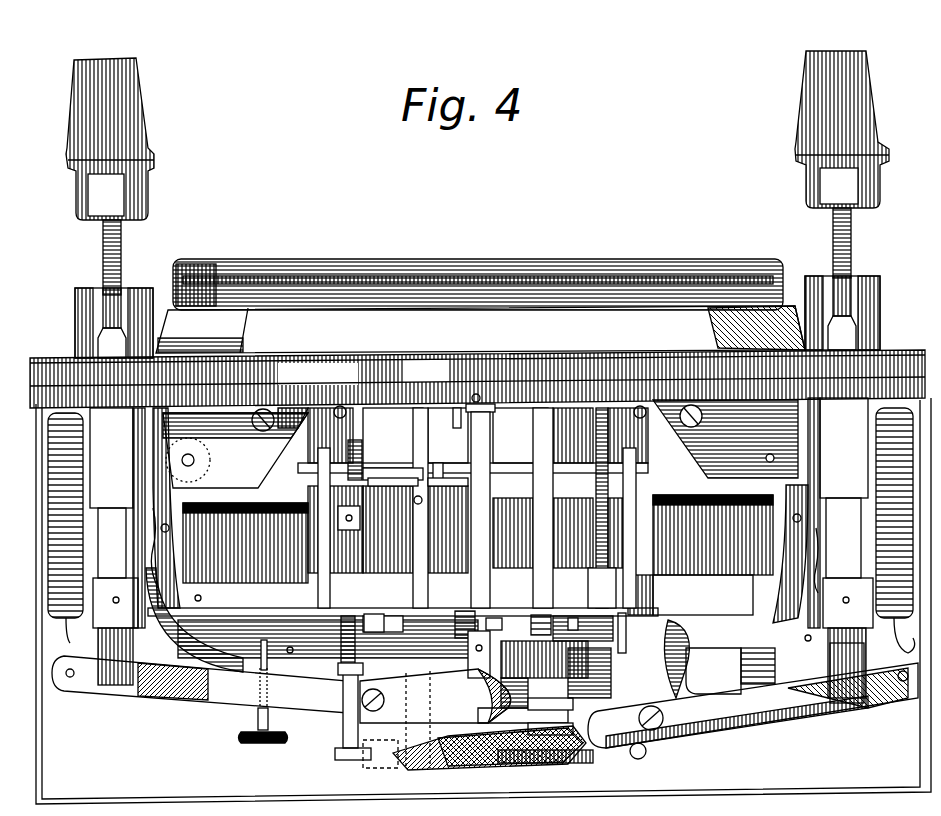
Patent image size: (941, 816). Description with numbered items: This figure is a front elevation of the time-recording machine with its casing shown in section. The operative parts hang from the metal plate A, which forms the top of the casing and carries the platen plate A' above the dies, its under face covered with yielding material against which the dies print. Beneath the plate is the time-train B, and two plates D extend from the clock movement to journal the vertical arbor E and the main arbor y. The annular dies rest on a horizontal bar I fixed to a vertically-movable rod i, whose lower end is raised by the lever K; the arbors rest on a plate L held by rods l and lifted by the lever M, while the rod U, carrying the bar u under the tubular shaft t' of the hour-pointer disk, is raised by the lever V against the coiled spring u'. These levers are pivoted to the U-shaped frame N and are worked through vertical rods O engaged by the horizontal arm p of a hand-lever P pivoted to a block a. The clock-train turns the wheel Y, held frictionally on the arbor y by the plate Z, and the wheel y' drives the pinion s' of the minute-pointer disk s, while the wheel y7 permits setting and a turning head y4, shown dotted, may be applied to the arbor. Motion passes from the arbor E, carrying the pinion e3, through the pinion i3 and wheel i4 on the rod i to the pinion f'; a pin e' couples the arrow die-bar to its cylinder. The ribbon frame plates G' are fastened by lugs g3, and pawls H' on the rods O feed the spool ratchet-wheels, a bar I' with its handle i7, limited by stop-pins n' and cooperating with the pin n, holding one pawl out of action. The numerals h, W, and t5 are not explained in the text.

The lever P is at (480, 173).
The vertical rod O is at (90, 338).
The block a is at (832, 301).
The screw shaft h is at (840, 290).
The metal plate A is at (467, 373).
The plate A' is at (480, 329).
The bracket W is at (293, 397).
The horizontal lug g3 is at (332, 398).
The pin e' is at (447, 417).
The horizontal bar I is at (488, 501).
The plate D is at (290, 460).
The sleeve or tubular shaft t' is at (393, 453).
The horizontal bar u is at (365, 459).
The wheel y7 is at (442, 456).
The arbor y is at (393, 485).
The wheel y' is at (441, 490).
The pinion / ratchet-wheel f' is at (401, 531).
The pawl H' is at (481, 548).
The pin n is at (476, 536).
The pinion s' is at (334, 518).
The disk s is at (317, 528).
The plate Z is at (415, 529).
The wheel Y is at (391, 529).
The pinion i3 is at (588, 548).
The wheel i4 is at (587, 588).
The plate G' is at (725, 440).
The time-train B is at (478, 547).
The straight bar or rod I' is at (690, 597).
The pin t5 is at (192, 592).
The stop-pin n' is at (268, 649).
The U-shaped bar or frame N is at (175, 636).
The lever M is at (205, 690).
The vertically-movable rod U is at (335, 720).
The handle i7 is at (263, 716).
The coiled spring u' is at (329, 641).
The horizontal arm p is at (365, 620).
The arbor E is at (435, 716).
The pinion e3 is at (504, 617).
The rod l is at (456, 696).
The plate L is at (556, 691).
The lever K is at (753, 711).
The lever V is at (474, 757).
The vertically-movable rod i is at (535, 748).
The turning head y4 is at (350, 752).